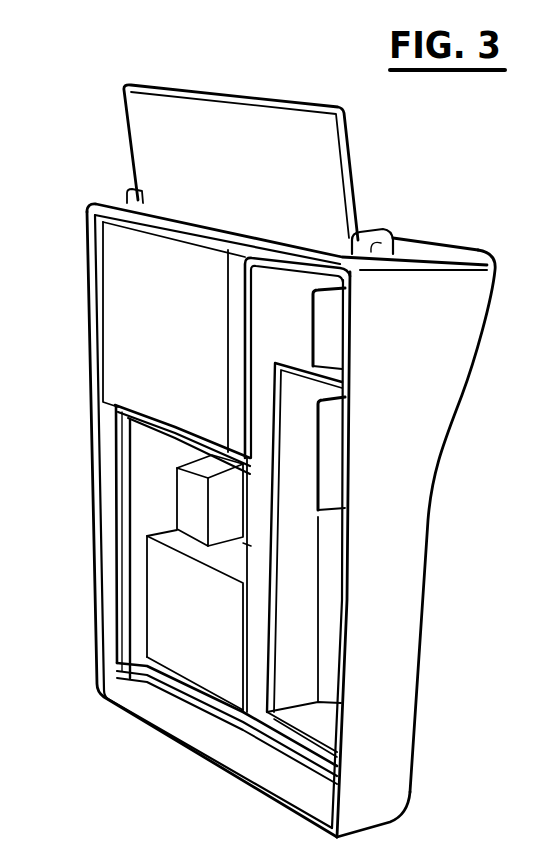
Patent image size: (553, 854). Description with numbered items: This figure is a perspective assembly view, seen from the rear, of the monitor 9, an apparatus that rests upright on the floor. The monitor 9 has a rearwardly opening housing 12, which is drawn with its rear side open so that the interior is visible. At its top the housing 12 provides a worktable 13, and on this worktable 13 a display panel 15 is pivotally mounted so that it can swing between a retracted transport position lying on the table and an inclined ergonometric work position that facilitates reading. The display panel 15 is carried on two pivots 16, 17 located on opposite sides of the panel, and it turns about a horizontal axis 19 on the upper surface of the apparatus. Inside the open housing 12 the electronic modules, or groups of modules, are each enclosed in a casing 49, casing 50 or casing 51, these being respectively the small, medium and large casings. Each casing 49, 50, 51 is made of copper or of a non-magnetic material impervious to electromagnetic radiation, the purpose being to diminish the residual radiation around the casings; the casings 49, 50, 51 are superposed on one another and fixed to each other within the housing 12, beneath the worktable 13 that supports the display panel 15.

The monitor 9 is at (290, 454).
The housing 12 is at (392, 794).
The worktable 13 is at (417, 243).
The display panel 15 is at (124, 118).
The pivot 16 is at (376, 241).
The pivot 17 is at (128, 190).
The horizontal axis 19 is at (182, 212).
The casing 49 is at (333, 342).
The casing 50 is at (165, 616).
The casing 51 is at (222, 744).